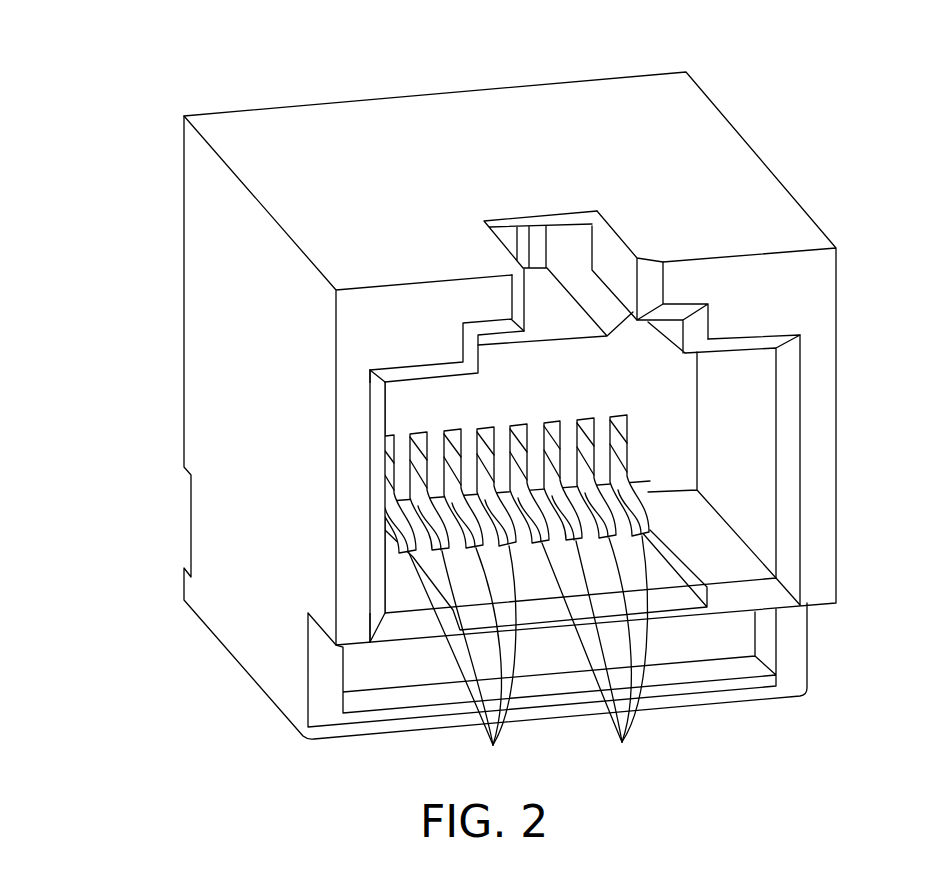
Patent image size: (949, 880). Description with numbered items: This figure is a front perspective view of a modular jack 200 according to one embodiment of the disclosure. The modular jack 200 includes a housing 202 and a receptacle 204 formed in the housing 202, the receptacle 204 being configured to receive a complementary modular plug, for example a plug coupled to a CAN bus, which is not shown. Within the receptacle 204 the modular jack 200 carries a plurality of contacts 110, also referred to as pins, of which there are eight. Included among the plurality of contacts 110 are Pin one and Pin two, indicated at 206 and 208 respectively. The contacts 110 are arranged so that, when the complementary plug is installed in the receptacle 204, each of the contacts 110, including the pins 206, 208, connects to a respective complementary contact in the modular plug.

The modular jack 200 is at (549, 406).
The housing 202 is at (510, 405).
The receptacle 204 is at (738, 382).
The Pin 1 206 is at (639, 596).
The Pin 2 208 is at (641, 596).
The contacts 110 is at (513, 596).